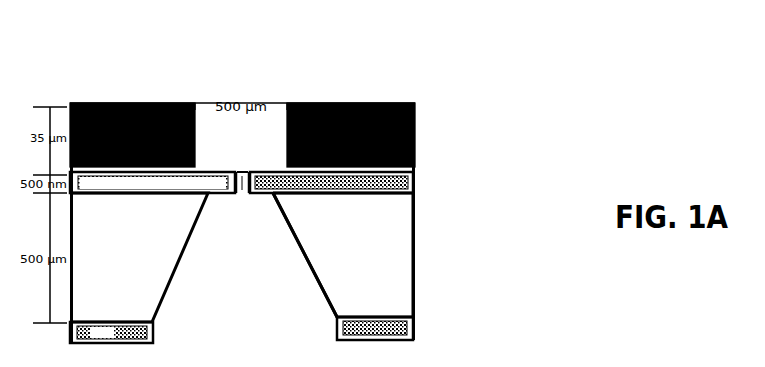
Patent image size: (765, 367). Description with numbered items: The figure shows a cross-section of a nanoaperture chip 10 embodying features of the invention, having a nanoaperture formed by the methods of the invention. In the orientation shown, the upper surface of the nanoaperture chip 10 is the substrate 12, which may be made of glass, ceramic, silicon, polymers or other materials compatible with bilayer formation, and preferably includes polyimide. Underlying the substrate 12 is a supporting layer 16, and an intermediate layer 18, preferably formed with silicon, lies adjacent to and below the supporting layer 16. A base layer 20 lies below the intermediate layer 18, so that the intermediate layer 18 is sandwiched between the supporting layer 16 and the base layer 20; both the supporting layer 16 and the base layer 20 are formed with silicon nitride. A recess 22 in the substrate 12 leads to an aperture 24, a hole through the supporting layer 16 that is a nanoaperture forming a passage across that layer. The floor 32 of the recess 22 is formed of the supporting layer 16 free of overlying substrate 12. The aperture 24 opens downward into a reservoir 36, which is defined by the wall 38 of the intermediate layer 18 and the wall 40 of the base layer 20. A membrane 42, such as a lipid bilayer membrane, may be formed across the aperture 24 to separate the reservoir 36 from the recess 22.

The nanoaperture chip 10 is at (60, 83).
The substrate 12 is at (415, 137).
The supporting layer 16 is at (269, 183).
The intermediate layer 18 is at (371, 255).
The base layer 20 is at (410, 324).
The recess 22 is at (265, 132).
The aperture 24 is at (243, 194).
The floor 32 is at (206, 171).
The reservoir 36 is at (159, 257).
The wall 38 is at (312, 273).
The wall 40 is at (337, 332).
The membrane 42 is at (260, 156).